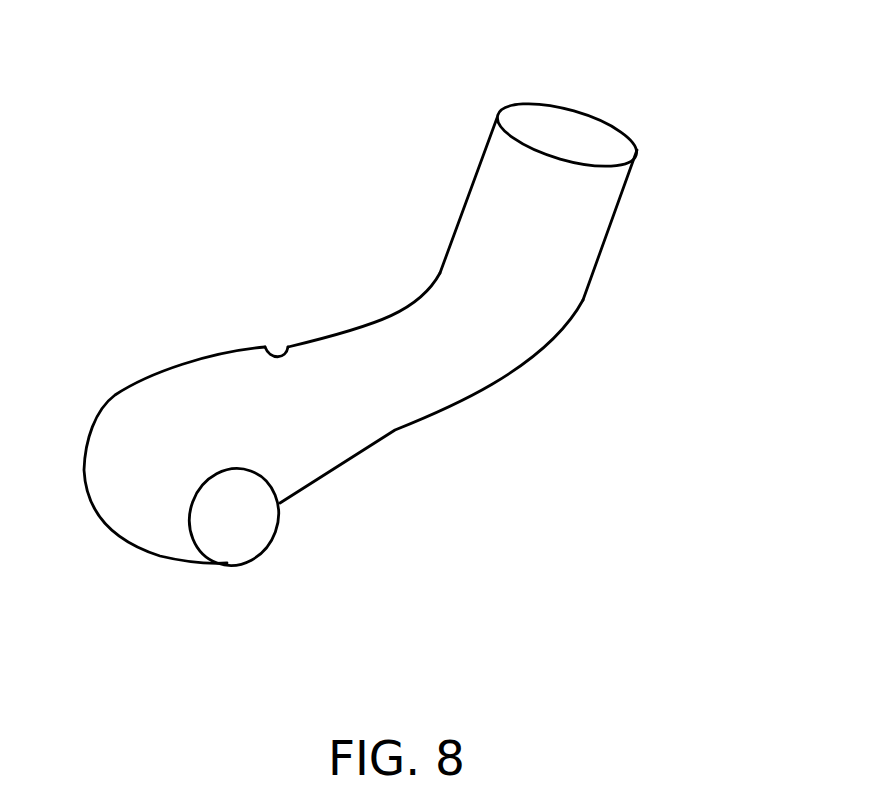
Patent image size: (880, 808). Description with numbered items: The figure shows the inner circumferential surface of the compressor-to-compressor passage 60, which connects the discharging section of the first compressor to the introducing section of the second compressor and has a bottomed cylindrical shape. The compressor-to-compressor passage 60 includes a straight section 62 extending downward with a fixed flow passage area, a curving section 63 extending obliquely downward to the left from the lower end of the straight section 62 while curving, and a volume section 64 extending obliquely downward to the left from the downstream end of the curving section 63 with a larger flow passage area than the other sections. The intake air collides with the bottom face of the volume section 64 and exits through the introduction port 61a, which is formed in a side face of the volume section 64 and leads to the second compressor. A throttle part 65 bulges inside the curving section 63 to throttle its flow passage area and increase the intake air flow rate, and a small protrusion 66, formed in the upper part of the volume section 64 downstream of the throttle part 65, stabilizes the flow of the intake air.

The compressor-to-compressor passage 60 is at (408, 336).
The introduction port 61a is at (237, 563).
The straight section 62 is at (573, 263).
The curving section 63 is at (475, 370).
The volume section 64 is at (170, 407).
The throttle part 65 is at (383, 320).
The protrusion 66 is at (270, 345).